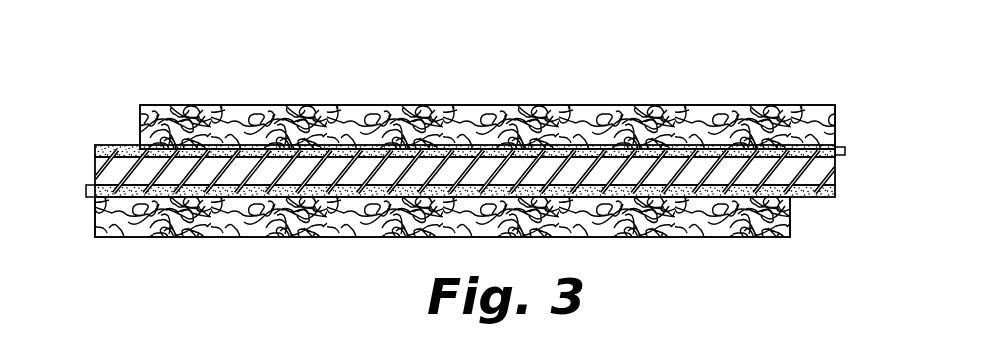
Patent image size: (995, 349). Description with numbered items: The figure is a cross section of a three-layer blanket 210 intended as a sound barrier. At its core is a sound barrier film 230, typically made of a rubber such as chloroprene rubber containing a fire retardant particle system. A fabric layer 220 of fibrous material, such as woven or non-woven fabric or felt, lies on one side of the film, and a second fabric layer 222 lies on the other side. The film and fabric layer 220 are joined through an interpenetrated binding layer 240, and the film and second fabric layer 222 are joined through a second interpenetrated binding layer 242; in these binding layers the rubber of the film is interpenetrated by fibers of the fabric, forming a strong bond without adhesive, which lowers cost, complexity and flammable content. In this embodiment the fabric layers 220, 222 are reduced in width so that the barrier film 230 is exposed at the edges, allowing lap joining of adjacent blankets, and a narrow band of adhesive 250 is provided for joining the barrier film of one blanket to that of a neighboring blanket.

The blanket 210 is at (464, 167).
The fabric layer 220 is at (527, 117).
The second fabric layer 222 is at (687, 217).
The sound barrier film 230 is at (813, 170).
The interpenetrated binding layer 240 is at (847, 152).
The second interpenetrated binding layer 242 is at (83, 189).
The band of adhesive 250 is at (115, 152).